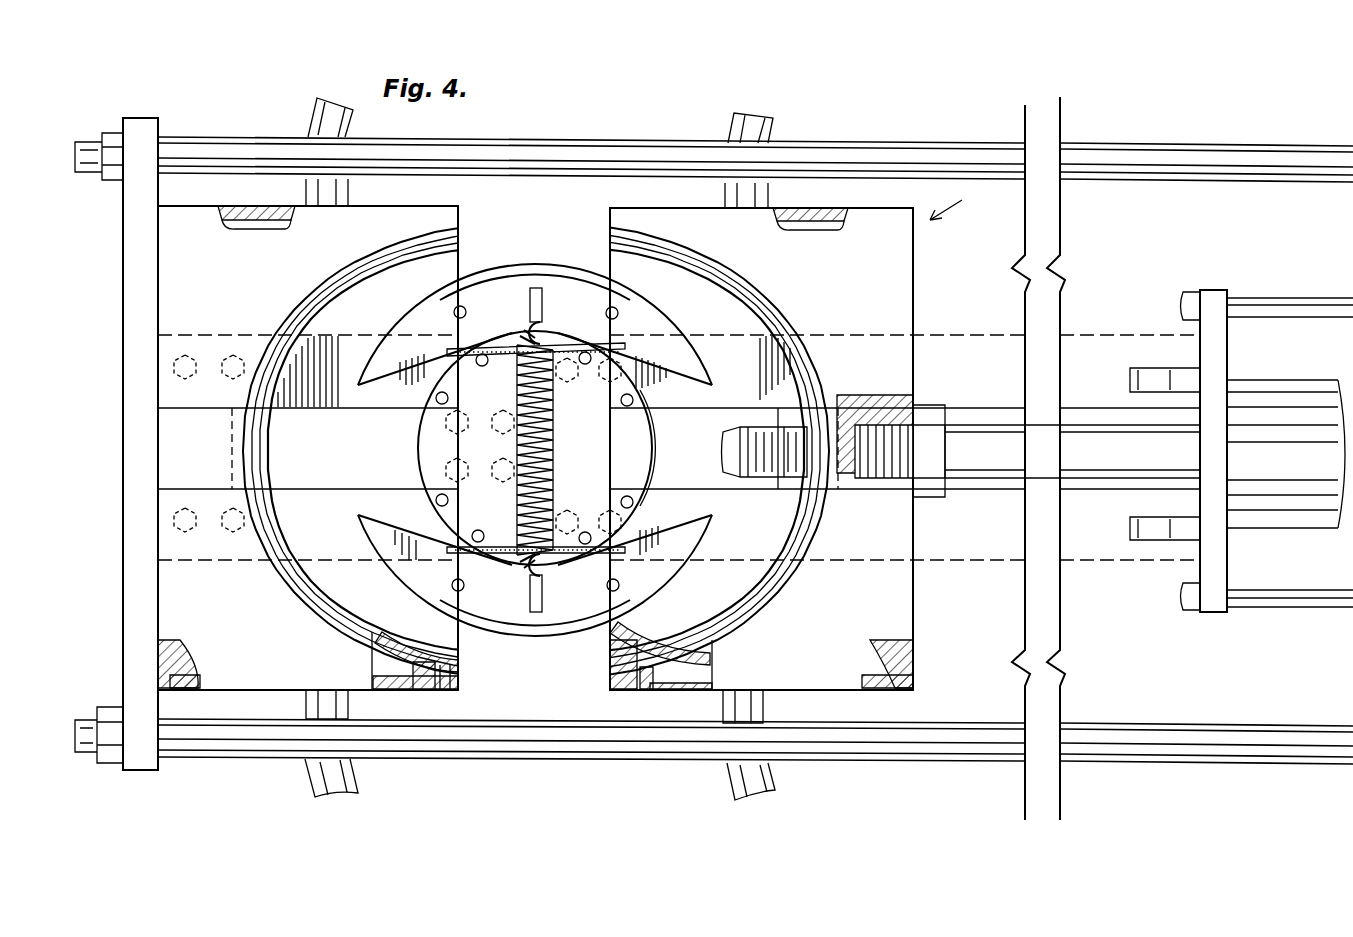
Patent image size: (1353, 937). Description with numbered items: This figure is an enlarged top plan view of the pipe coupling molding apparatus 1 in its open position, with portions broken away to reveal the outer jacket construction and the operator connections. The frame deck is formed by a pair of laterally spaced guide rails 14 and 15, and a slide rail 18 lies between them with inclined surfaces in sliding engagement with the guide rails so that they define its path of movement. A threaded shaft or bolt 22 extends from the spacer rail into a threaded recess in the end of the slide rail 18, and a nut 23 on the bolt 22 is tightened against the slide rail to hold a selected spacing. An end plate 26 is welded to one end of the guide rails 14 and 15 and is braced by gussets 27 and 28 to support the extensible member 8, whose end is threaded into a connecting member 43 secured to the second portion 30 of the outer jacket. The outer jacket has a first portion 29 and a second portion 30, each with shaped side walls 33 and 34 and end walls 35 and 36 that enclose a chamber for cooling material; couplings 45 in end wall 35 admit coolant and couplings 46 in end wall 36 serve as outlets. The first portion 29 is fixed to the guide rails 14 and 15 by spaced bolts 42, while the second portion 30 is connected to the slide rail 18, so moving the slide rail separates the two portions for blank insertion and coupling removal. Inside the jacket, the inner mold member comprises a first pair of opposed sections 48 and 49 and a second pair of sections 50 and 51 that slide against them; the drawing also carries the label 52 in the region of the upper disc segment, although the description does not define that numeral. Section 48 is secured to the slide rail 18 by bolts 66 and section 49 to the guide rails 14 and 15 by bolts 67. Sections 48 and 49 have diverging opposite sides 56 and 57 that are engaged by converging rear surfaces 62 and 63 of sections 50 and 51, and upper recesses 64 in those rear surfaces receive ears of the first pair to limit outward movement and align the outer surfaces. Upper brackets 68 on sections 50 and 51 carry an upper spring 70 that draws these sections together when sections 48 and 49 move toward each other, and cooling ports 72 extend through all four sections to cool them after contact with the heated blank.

The pipe coupling molding apparatus 1 is at (947, 214).
The extensible member 8 is at (986, 426).
The guide rail 14 is at (715, 350).
The guide rail 15 is at (232, 565).
The slide rail 18 is at (232, 446).
The threaded shaft or bolt 22 is at (790, 478).
The nut 23 is at (786, 420).
The end plate 26 is at (1222, 362).
The gusset 27 is at (1180, 368).
The gusset 28 is at (1170, 518).
The first portion of outer jacket 29 is at (175, 292).
The second portion of outer jacket 30 is at (903, 274).
The side wall 33 is at (172, 655).
The side wall 34 is at (395, 655).
The end wall 35 is at (190, 674).
The end wall 36 is at (257, 222).
The screws or bolts 42 is at (182, 380).
The connecting member 43 is at (893, 395).
The couplings 45 is at (306, 702).
The couplings 46 is at (348, 188).
The section of inner mold member 48 is at (430, 457).
The section of inner mold member 49 is at (646, 476).
The section of inner mold member 50 is at (638, 301).
The section of inner mold member 51 is at (586, 632).
The upper disc segment 52 is at (560, 264).
The opposite side 56 is at (518, 332).
The opposite side 57 is at (520, 566).
The rear surface 62 is at (398, 377).
The rear surface 63 is at (668, 372).
The upper recess 64 is at (566, 346).
The screws or bolts 66 is at (458, 434).
The screws or bolts 67 is at (608, 383).
The upper bracket 68 is at (544, 300).
The upper spring 70 is at (556, 441).
The cooling ports 72 is at (454, 315).